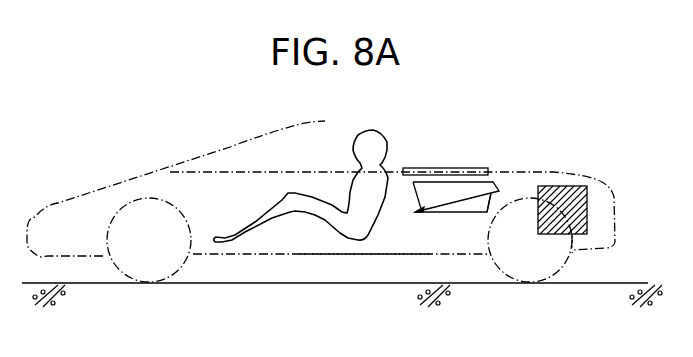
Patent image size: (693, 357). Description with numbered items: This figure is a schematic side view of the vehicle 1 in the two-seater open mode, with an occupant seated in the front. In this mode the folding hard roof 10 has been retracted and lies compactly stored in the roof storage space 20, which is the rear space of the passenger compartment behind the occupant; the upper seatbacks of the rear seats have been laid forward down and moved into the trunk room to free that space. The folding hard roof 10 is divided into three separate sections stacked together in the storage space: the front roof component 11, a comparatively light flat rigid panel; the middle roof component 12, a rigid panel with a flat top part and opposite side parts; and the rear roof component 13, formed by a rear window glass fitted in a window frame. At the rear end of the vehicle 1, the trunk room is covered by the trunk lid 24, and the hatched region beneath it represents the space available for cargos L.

The vehicle 1 is at (163, 159).
The folding hard roof 10 is at (481, 154).
The front roof component 11 is at (426, 168).
The middle roof component 12 is at (470, 180).
The rear roof component 13 is at (516, 174).
The roof storage space 20 is at (418, 236).
The trunk lid 24 is at (562, 173).
The cargos L is at (587, 201).